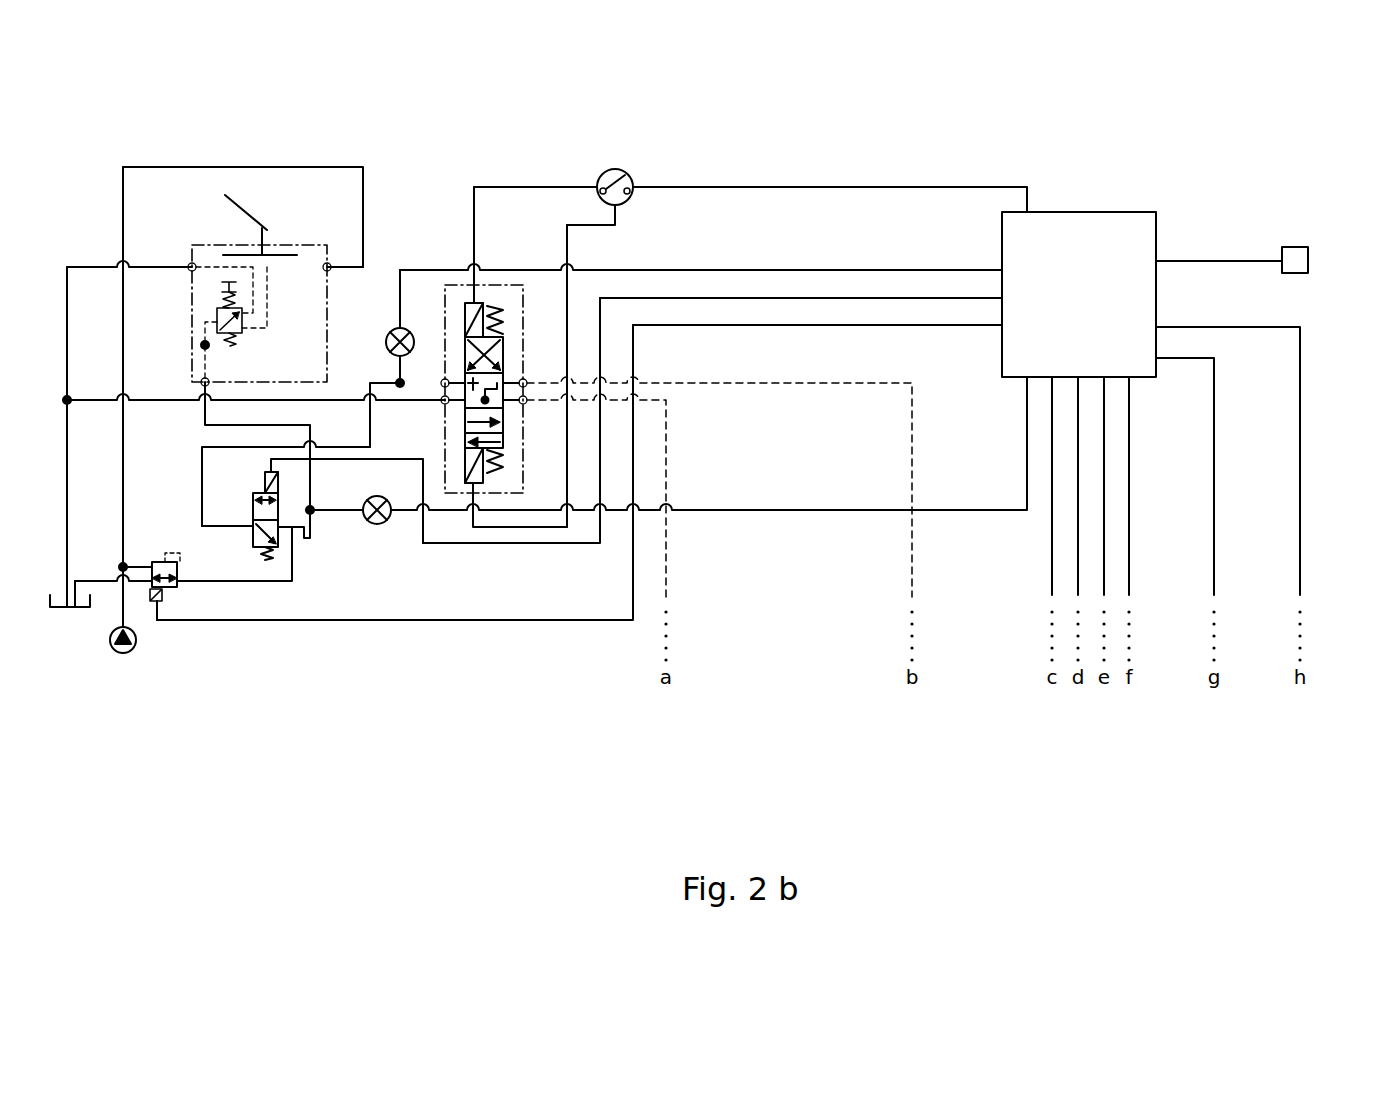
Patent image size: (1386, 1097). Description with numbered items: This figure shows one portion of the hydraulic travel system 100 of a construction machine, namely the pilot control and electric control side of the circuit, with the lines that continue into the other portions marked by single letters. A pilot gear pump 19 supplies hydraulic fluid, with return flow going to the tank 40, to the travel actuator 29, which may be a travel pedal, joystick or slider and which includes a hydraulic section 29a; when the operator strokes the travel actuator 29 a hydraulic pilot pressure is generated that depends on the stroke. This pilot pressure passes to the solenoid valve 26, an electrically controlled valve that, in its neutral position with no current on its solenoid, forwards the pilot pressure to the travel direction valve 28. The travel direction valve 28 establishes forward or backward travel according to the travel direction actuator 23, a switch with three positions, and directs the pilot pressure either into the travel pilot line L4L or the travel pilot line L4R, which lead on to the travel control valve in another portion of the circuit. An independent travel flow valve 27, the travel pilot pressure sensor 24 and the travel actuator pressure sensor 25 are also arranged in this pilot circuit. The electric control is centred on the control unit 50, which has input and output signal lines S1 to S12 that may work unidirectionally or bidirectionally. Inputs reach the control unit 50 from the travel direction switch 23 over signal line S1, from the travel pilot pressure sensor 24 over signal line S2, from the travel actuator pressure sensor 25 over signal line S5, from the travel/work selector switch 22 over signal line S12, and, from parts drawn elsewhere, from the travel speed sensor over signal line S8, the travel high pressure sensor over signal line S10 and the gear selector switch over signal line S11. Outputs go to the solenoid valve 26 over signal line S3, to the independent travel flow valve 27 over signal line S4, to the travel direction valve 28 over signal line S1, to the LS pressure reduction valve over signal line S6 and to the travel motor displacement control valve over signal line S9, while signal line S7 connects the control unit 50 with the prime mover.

The pilot gear pump 19 is at (123, 655).
The travel/work selector switch 22 is at (1295, 247).
The travel direction actuator 23 is at (615, 168).
The travel pilot pressure sensor 24 is at (388, 335).
The travel actuator pressure sensor 25 is at (375, 527).
The solenoid valve 26 is at (253, 505).
The independent travel flow valve 27 is at (157, 560).
The travel direction valve 28 is at (499, 283).
The travel actuator 29 is at (250, 212).
The hydraulic section 29a is at (190, 352).
The tank 40 is at (70, 612).
The control unit 50 is at (1078, 210).
The hydraulic travel system 100 is at (868, 705).
The signal line S1 is at (823, 185).
The signal line S2 is at (823, 270).
The signal line S3 is at (871, 297).
The signal line S4 is at (945, 328).
The signal line S5 is at (1027, 455).
The signal line S6 is at (1052, 530).
The signal line S7 is at (1078, 563).
The signal line S8 is at (1104, 516).
The signal line S9 is at (1129, 474).
The signal line S10 is at (1214, 463).
The signal line S11 is at (1300, 449).
The signal line S12 is at (1219, 258).
The travel pilot line L4R is at (669, 473).
The travel pilot line L4L is at (910, 473).